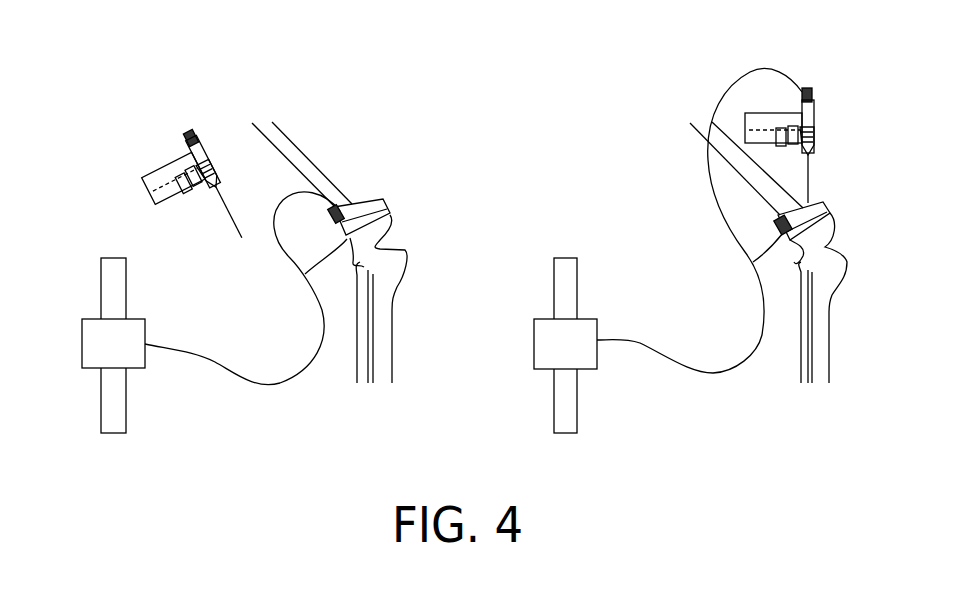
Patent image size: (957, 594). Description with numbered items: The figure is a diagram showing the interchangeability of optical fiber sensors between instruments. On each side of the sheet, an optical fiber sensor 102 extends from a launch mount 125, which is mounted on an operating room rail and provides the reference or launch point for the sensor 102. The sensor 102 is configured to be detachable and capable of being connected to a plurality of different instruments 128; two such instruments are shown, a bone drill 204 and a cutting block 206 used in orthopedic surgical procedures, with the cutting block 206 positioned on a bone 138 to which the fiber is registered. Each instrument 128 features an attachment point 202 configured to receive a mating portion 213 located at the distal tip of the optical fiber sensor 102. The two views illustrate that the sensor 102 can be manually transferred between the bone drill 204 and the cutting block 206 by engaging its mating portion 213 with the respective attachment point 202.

The optical fiber sensor 102 is at (280, 383).
The launch mount 125 is at (95, 344).
The instrument 128 is at (160, 175).
The bone 138 is at (280, 127).
The attachment point 202 is at (305, 274).
The bone drill 204 is at (173, 200).
The cutting block 206 is at (390, 217).
The mating portion 213 is at (350, 200).